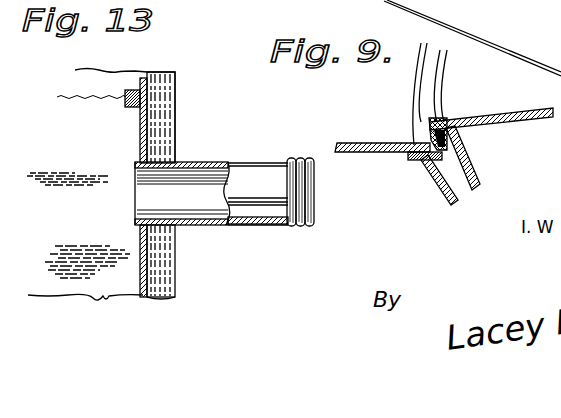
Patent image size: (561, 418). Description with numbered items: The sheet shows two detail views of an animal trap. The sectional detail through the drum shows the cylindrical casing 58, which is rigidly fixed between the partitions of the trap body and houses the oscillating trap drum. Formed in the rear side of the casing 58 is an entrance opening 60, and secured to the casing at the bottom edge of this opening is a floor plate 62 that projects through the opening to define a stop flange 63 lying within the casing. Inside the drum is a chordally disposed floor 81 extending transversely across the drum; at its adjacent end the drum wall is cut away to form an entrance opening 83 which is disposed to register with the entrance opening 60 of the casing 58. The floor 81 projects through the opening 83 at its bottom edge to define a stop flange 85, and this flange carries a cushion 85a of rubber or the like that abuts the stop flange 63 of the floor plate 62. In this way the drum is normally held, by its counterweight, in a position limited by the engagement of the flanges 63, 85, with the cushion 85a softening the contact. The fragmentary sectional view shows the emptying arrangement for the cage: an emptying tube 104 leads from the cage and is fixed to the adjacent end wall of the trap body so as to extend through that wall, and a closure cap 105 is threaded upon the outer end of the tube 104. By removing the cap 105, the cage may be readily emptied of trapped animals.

In FIG. 13, the emptying tube 104 is at (210, 163).
In FIG. 13, the closure cap 105 is at (314, 197).
In FIG. 9, the entrance opening 60 is at (415, 83).
In FIG. 9, the entrance opening 83 is at (441, 87).
In FIG. 9, the floor 81 is at (508, 108).
In FIG. 9, the stop flange 85 is at (430, 123).
In FIG. 9, the cushion 85a is at (445, 136).
In FIG. 9, the floor plate 62 is at (382, 153).
In FIG. 9, the stop flange 63 is at (433, 163).
In FIG. 9, the cylindrical casing 58 is at (447, 199).